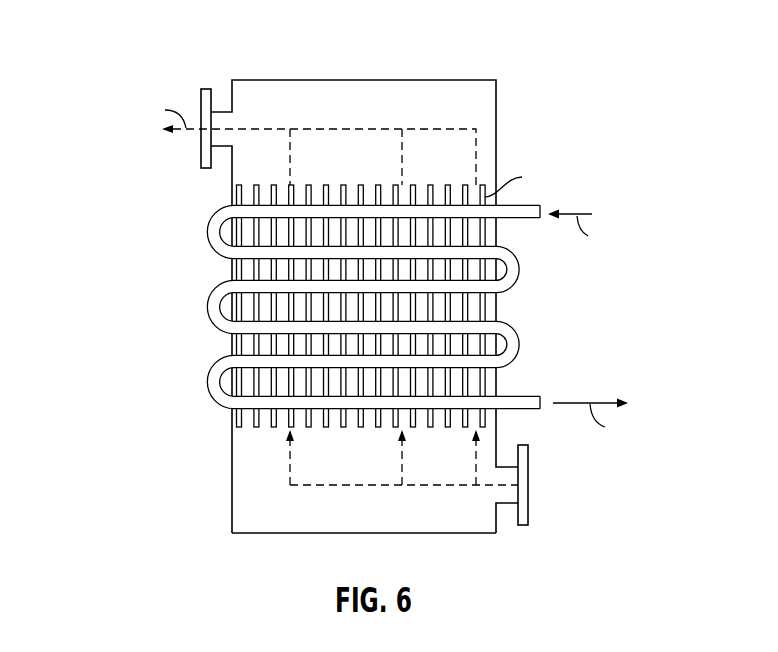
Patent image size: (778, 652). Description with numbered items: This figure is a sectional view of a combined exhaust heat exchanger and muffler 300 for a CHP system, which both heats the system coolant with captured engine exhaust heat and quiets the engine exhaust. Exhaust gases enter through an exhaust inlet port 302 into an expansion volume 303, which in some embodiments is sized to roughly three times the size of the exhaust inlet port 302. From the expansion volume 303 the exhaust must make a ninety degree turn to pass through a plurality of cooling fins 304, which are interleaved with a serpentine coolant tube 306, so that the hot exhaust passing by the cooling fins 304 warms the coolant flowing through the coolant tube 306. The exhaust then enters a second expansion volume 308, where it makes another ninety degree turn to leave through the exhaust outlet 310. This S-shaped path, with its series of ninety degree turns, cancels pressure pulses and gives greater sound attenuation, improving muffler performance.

The exhaust heat exchanger/muffler 300 is at (141, 27).
The exhaust inlet port 302 is at (530, 485).
The expansion volume 303 is at (245, 503).
The cooling fins 304 is at (256, 427).
The serpentine coolant tube 306 is at (215, 303).
The second expansion volume 308 is at (485, 147).
The exhaust outlet 310 is at (203, 135).